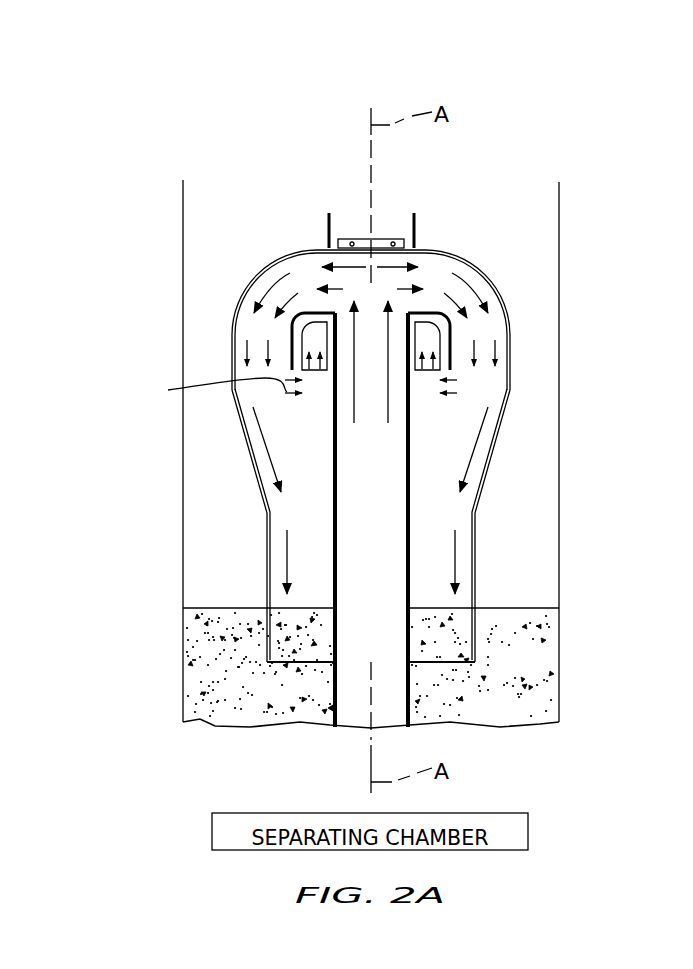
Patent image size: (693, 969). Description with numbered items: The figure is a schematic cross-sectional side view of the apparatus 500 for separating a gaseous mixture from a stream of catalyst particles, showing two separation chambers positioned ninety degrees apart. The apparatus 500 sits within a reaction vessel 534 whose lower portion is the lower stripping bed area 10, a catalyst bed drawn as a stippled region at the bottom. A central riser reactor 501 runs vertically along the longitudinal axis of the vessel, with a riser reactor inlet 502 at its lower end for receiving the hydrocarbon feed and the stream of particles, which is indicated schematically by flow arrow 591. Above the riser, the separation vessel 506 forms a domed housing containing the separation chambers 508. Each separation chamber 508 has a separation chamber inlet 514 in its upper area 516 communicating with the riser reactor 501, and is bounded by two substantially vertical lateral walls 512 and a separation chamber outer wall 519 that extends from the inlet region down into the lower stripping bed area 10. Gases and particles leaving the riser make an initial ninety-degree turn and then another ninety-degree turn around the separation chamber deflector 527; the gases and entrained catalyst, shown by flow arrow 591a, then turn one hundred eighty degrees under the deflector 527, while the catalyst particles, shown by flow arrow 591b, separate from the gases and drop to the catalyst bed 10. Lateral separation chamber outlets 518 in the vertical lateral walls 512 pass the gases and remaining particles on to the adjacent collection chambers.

The apparatus 500 is at (275, 191).
The separation vessel 506 is at (249, 270).
The flow arrow 591 is at (393, 265).
The separation chamber inlet 514 is at (410, 278).
The upper area of the separation chamber 516 is at (459, 265).
The lateral separation chamber outlet 518 is at (452, 338).
The reaction vessel 534 is at (560, 207).
The separation chamber deflector 527 is at (290, 333).
The flow arrow for gases and entrained catalyst 591a is at (302, 362).
The vertical lateral wall 512 is at (288, 430).
The lower stripping bed area 10 is at (208, 598).
The separation chamber 508 is at (290, 462).
The flow arrow for catalyst particles 591b is at (480, 437).
The separation chamber outer wall 519 is at (478, 582).
The riser reactor 501 is at (408, 644).
The riser reactor inlet 502 is at (389, 708).